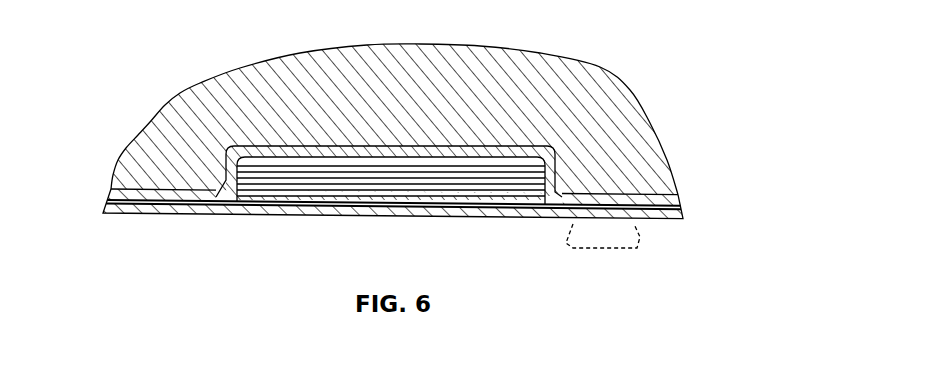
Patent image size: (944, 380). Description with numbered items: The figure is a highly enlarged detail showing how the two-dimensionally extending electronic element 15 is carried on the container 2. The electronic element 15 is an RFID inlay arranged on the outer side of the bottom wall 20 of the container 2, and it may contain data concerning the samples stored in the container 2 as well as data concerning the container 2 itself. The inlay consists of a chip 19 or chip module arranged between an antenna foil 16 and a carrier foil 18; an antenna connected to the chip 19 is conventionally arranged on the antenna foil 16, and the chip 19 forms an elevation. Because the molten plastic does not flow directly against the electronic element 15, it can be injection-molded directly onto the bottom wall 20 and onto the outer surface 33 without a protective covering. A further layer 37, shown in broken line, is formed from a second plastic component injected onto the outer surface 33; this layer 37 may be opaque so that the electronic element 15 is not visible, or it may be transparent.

The bottom wall 20 is at (620, 110).
The carrier foil 18 is at (672, 193).
The chip 19 is at (496, 183).
The antenna foil 16 is at (150, 205).
The two-dimensionally extending electronic element 15 is at (227, 215).
The outer surface 33 is at (440, 218).
The container 2 is at (669, 223).
The layer 37 is at (604, 230).